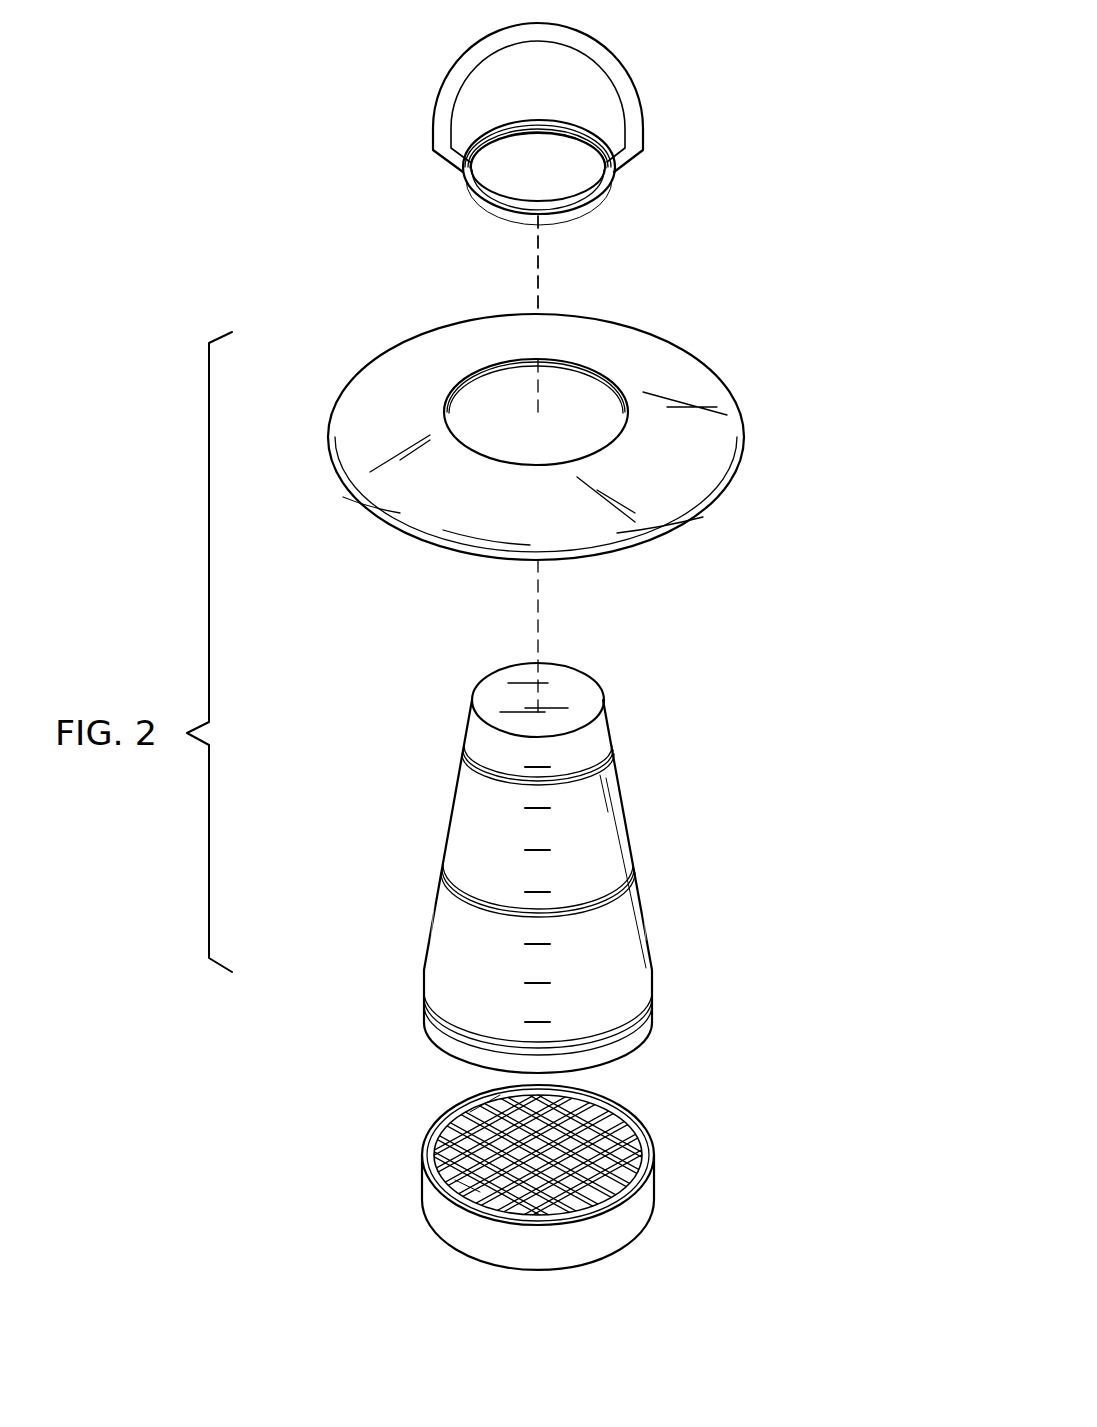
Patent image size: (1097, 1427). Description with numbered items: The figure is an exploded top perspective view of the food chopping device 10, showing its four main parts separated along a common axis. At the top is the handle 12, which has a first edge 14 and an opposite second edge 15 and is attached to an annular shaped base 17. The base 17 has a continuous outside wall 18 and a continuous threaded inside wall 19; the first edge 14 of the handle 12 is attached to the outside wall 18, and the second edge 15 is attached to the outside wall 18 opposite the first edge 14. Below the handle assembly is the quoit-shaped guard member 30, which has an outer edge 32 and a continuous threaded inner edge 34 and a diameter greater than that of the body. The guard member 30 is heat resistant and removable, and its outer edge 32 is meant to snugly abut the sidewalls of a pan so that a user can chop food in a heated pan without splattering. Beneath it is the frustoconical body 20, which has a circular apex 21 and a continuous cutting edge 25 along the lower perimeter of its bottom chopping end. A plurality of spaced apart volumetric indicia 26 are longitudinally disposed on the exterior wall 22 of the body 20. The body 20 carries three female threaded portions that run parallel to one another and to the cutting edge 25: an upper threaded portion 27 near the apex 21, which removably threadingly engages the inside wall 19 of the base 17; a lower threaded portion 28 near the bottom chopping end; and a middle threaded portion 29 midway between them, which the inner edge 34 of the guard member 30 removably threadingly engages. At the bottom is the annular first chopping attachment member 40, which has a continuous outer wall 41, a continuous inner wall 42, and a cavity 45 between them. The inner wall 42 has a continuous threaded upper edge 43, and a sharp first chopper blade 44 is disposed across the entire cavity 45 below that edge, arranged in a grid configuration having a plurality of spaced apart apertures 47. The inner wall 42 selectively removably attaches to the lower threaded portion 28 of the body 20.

The food chopping device 10 is at (712, 311).
The handle 12 is at (638, 97).
The first edge 14 is at (610, 170).
The second edge 15 is at (467, 173).
The base 17 is at (498, 210).
The outside wall 18 is at (583, 198).
The inside wall 19 is at (488, 137).
The frustoconical body 20 is at (620, 800).
The circular apex 21 is at (580, 690).
The exterior wall 22 is at (624, 925).
The cutting edge 25 is at (625, 1047).
The volumetric indicia 26 is at (533, 890).
The upper threaded portion 27 is at (605, 740).
The lower threaded portion 28 is at (648, 995).
The middle threaded portion 29 is at (627, 865).
The guard member 30 is at (697, 370).
The outer edge 32 is at (698, 515).
The inner edge 34 is at (547, 362).
The first chopping attachment member 40 is at (633, 1245).
The outer wall 41 is at (648, 1198).
The inner wall 42 is at (652, 1143).
The threaded upper edge 43 is at (427, 1138).
The first chopper blade 44 is at (600, 1140).
The cavity 45 is at (486, 1130).
The apertures 47 is at (480, 1192).